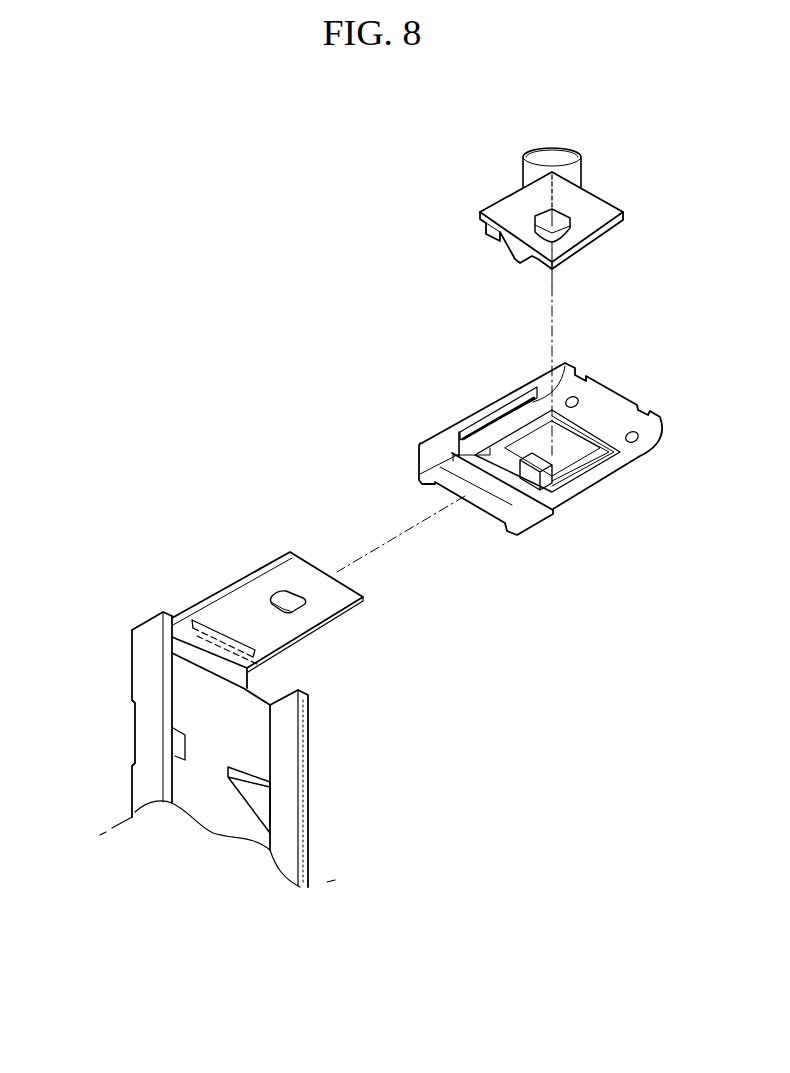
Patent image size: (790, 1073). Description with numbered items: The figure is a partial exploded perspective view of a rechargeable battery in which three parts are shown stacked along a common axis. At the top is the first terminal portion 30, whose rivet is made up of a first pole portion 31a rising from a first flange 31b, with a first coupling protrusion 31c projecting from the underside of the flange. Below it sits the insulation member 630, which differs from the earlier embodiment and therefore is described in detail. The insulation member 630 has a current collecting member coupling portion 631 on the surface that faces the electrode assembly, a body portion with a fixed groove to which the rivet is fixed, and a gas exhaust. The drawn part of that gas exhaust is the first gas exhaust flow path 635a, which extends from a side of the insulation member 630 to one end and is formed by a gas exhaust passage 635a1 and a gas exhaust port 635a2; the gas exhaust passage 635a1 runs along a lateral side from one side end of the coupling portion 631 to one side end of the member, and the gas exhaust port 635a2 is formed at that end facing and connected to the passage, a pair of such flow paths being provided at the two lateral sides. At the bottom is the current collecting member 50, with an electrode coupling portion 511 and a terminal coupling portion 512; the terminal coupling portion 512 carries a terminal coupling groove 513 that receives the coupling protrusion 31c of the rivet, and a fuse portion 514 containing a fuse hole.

The first terminal portion 30 is at (470, 240).
The first pole portion 31a is at (533, 174).
The first flange 31b is at (596, 202).
The first coupling protrusion 31c is at (560, 238).
The insulation member 630 is at (620, 388).
The current collecting member coupling portion 631 is at (488, 502).
The first gas exhaust flow path 635a is at (683, 561).
The gas exhaust passage 635a1 is at (508, 408).
The gas exhaust port 635a2 is at (573, 407).
The bracket 50 is at (118, 700).
The electrode coupling portion 511 is at (243, 740).
The terminal coupling portion 512 is at (250, 577).
The terminal coupling groove 513 is at (287, 602).
The fuse portion 514 is at (215, 618).